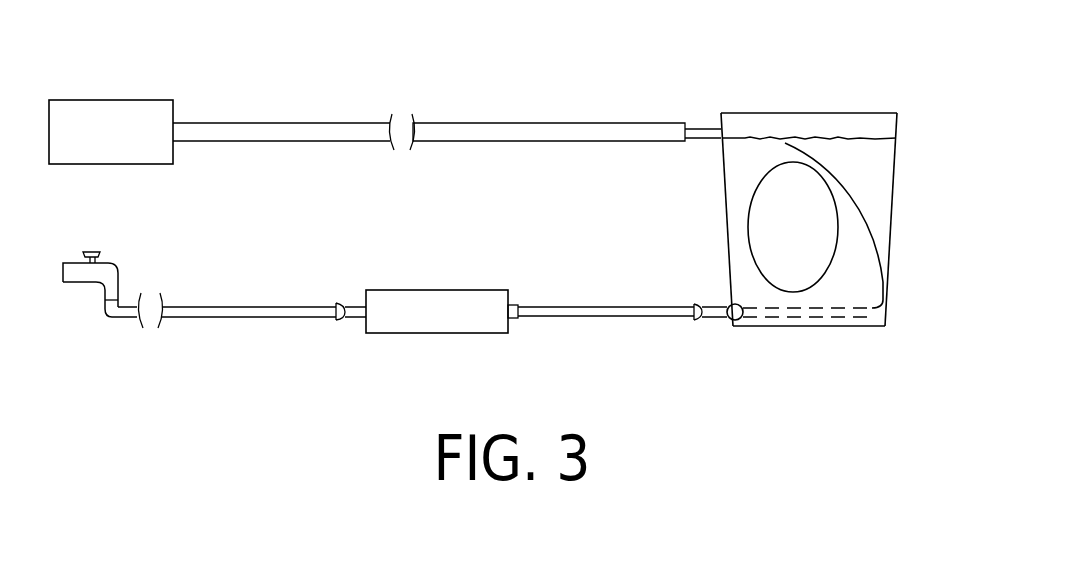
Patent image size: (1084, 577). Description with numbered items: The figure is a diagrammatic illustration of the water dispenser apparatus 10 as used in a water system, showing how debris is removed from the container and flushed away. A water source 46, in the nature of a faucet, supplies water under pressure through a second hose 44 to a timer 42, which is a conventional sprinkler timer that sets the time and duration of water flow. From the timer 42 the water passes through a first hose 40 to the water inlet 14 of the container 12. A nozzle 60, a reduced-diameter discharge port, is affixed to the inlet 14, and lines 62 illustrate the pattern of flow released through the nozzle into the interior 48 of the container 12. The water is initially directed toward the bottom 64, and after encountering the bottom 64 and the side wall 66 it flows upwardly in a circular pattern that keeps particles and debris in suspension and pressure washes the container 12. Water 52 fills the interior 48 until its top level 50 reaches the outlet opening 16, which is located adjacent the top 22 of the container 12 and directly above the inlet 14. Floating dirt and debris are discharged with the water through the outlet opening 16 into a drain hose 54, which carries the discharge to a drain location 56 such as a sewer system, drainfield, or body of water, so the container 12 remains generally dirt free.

The water dispenser apparatus 10 is at (925, 89).
The container 12 is at (890, 230).
The water inlet 14 is at (713, 320).
The outlet opening 16 is at (703, 129).
The top of container 22 is at (755, 113).
The first hose 40 is at (618, 305).
The timer 42 is at (467, 290).
The second hose 44 is at (255, 305).
The water source 46 is at (118, 279).
The interior of container 48 is at (887, 282).
The top level of water 50 is at (803, 121).
The water 52 is at (873, 185).
The drain hose 54 is at (552, 123).
The drain location 56 is at (135, 100).
The nozzle 60 is at (737, 320).
The lines 62 is at (822, 324).
The bottom of container 64 is at (862, 327).
The side wall of container 66 is at (895, 160).